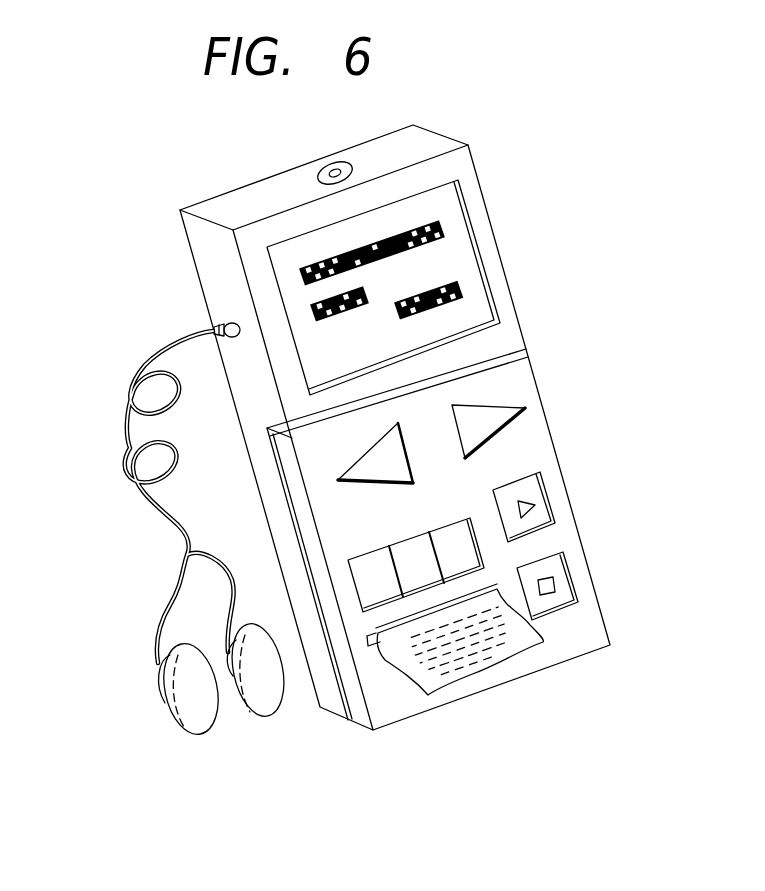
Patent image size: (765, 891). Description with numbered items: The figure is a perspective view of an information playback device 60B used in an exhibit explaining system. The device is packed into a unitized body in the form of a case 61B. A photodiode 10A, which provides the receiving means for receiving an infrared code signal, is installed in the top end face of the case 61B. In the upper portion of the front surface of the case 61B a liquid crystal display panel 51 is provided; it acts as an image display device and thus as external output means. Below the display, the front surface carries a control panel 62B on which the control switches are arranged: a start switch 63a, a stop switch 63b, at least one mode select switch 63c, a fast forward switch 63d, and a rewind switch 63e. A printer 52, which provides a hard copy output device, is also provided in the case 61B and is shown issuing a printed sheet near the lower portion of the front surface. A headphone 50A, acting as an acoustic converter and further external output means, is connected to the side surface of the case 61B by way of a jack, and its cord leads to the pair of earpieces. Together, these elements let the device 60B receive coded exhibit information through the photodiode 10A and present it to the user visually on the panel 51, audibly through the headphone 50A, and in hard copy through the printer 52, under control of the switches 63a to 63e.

The information playback device 60B is at (146, 249).
The photodiode 10A is at (331, 170).
The case 61B is at (490, 218).
The liquid crystal display panel 51 is at (480, 313).
The operation panel 62B is at (530, 420).
The start switch 63a is at (543, 510).
The stop switch 63b is at (565, 592).
The mode select switch 63c is at (416, 555).
The fast forward switch 63d is at (507, 402).
The rewind switch 63e is at (338, 476).
The printer 52 is at (383, 655).
The headphone 50A is at (190, 742).